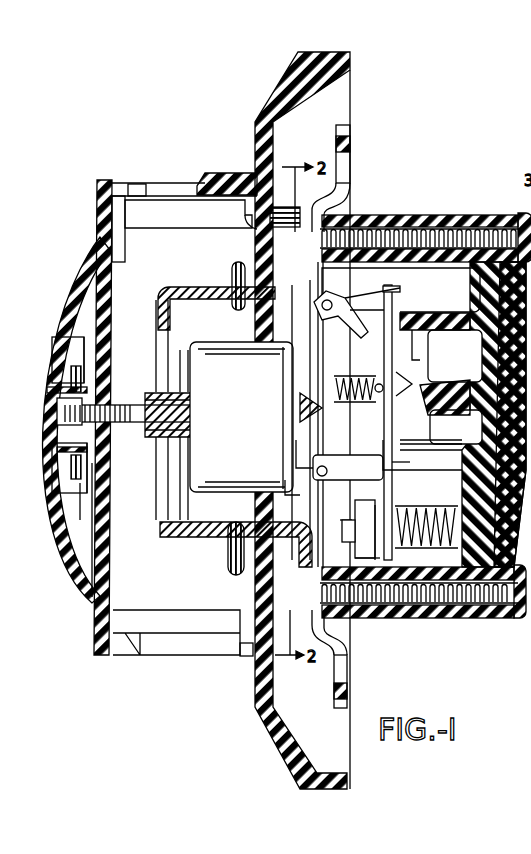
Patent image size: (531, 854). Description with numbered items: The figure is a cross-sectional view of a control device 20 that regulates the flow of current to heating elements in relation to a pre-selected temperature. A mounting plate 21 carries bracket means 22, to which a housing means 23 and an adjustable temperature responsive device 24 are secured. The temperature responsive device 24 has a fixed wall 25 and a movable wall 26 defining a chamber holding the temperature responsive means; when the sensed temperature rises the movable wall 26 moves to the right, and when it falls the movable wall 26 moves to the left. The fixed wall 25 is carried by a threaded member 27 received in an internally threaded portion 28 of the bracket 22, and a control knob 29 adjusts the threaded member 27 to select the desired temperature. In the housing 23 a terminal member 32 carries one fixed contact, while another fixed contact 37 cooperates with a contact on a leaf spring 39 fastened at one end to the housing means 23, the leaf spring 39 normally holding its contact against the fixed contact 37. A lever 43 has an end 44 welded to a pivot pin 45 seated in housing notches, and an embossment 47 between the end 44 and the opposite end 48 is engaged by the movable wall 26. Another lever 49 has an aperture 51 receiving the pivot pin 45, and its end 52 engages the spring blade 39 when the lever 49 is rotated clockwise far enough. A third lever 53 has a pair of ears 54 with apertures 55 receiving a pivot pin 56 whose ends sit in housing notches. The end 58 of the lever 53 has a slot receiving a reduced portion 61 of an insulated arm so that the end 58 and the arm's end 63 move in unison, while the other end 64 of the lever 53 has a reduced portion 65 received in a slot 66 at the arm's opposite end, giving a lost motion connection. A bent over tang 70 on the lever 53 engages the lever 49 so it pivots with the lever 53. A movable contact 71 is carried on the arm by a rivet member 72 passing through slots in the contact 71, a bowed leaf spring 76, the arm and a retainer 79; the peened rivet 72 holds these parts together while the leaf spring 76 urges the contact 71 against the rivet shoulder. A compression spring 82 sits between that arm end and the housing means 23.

The control device 20 is at (374, 76).
The mounting plate 21 is at (295, 72).
The bracket means 22 is at (210, 290).
The housing means 23 is at (436, 213).
The adjustable temperature responsive device 24 is at (216, 500).
The fixed wall 25 is at (182, 465).
The movable wall 26 is at (293, 486).
The threaded member 27 is at (160, 442).
The internally threaded portion 28 is at (188, 380).
The control knob 29 is at (56, 560).
The terminal member 32 is at (358, 517).
The fixed contact 37 is at (496, 352).
The leaf spring 39 is at (441, 378).
The lever 43 is at (300, 410).
The end 44 is at (296, 456).
The pivot pin 45 is at (320, 462).
The embossment 47 is at (305, 398).
The end 48 is at (320, 356).
The lever 49 is at (362, 545).
The aperture 51 is at (344, 504).
The end 52 is at (412, 346).
The third lever 53 is at (325, 350).
The ears 54 is at (357, 279).
The apertures 55 is at (382, 414).
The pivot pin 56 is at (347, 320).
The end 58 is at (401, 280).
The reduced portion 61 is at (402, 302).
The end 63 is at (400, 382).
The end 64 is at (395, 462).
The reduced portion 65 is at (462, 433).
The slot 66 is at (386, 470).
The bent over tang 70 is at (384, 388).
The movable contact 71 is at (370, 532).
The rivet member 72 is at (372, 545).
The bowed leaf spring 76 is at (378, 620).
The retainer 79 is at (400, 620).
The compression spring 82 is at (440, 505).